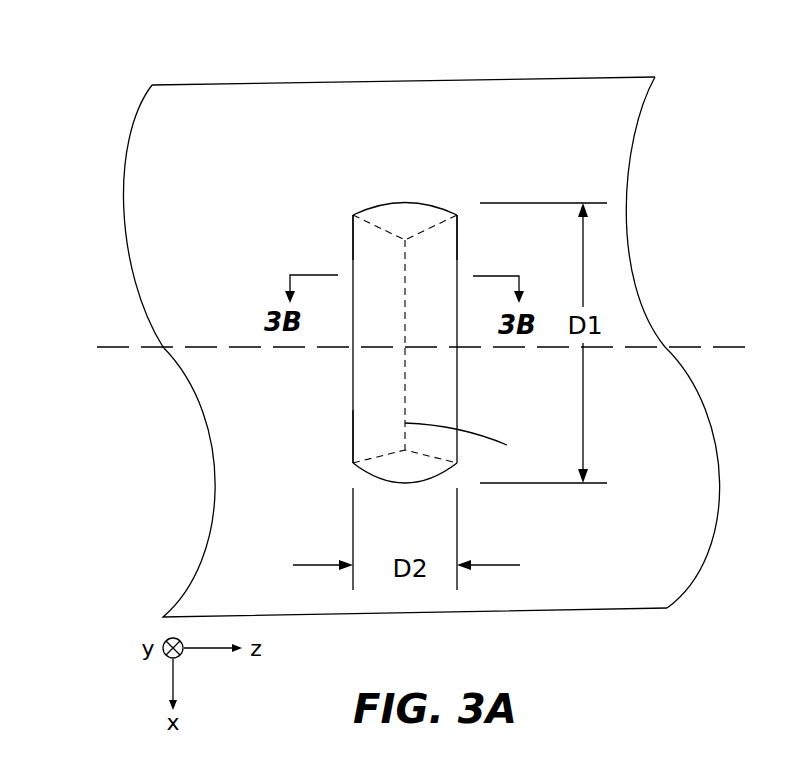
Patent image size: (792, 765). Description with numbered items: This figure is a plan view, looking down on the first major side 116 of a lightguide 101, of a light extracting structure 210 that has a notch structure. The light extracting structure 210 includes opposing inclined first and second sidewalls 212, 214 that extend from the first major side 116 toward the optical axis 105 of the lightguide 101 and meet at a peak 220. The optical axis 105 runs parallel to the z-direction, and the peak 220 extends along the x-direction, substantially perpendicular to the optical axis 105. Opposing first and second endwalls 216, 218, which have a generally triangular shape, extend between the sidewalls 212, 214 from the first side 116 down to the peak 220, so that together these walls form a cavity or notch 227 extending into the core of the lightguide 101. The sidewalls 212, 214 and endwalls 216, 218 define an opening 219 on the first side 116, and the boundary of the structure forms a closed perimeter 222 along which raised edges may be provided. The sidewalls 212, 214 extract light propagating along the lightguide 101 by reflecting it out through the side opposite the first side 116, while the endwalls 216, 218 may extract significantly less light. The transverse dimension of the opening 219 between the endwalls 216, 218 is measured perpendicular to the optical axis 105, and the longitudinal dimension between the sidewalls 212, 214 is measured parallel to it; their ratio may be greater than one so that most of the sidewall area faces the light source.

The lightguide 101 is at (607, 187).
The optical axis 105 is at (712, 346).
The first major side 116 is at (571, 103).
The light extracting structure 210 is at (409, 276).
The first sidewall 212 is at (370, 385).
The second sidewall 214 is at (435, 393).
The first endwall 216 is at (406, 210).
The second endwall 218 is at (410, 470).
The opening 219 is at (442, 250).
The peak 220 is at (482, 447).
The closed perimeter 222 is at (352, 223).
The notch 227 is at (368, 420).